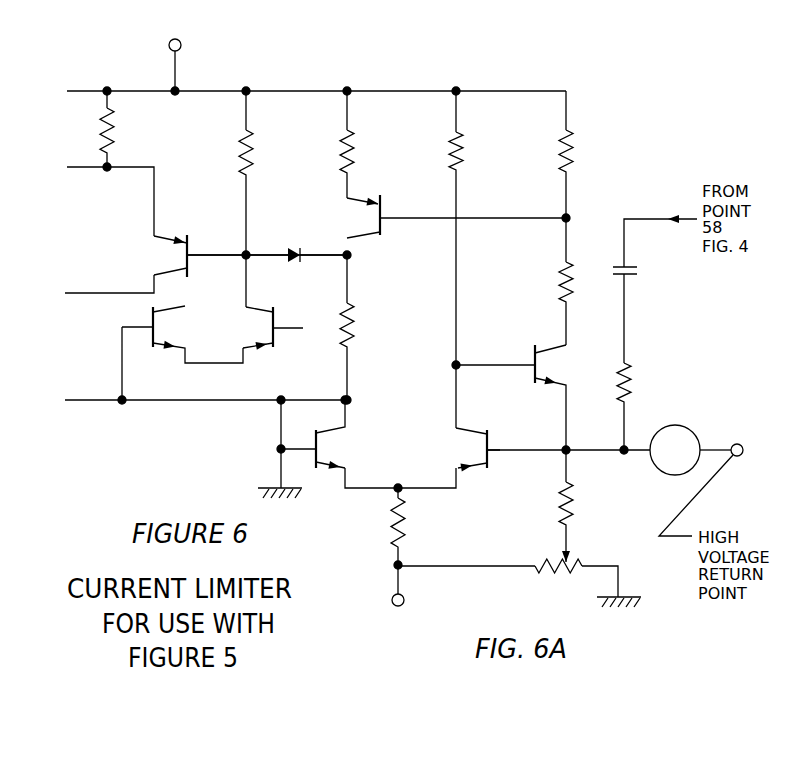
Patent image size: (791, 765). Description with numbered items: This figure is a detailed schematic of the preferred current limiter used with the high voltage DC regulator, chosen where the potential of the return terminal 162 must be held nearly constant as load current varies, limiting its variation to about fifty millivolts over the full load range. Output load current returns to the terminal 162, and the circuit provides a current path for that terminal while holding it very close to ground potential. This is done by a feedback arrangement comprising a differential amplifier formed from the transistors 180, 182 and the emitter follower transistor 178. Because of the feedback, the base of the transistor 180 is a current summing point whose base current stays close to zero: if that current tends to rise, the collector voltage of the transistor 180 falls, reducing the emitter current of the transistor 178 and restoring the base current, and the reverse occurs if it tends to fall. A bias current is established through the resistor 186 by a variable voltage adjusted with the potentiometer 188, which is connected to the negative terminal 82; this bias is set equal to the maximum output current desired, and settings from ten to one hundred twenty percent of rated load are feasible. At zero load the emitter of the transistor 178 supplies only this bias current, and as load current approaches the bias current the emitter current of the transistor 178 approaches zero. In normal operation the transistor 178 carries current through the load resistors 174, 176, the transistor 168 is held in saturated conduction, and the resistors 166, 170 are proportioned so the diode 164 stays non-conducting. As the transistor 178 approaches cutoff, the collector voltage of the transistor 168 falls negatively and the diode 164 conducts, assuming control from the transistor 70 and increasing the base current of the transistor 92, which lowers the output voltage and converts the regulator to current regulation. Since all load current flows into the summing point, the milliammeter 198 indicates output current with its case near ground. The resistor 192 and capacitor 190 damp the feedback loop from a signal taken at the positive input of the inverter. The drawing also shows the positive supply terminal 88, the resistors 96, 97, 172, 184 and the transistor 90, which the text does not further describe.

The positive supply terminal 88 is at (185, 56).
The resistor 96 is at (110, 138).
The resistor 97 is at (252, 158).
The resistor 166 is at (352, 160).
The transistor 168 is at (383, 210).
The resistor 172 is at (462, 160).
The load resistor 174 is at (572, 160).
The load resistor 176 is at (560, 290).
The emitter follower transistor 178 is at (530, 352).
The capacitor 190 is at (630, 265).
The resistor 192 is at (630, 385).
The milliammeter 198 is at (680, 428).
The terminal 162 is at (740, 451).
The transistor 180 is at (490, 440).
The transistor 182 is at (318, 437).
The resistor 184 is at (393, 517).
The negative terminal 82 is at (398, 596).
The resistor 186 is at (572, 502).
The potentiometer 188 is at (553, 575).
The transistor 92 is at (190, 248).
The diode 164 is at (294, 250).
The transistor 90 is at (148, 318).
The transistor 70 is at (277, 318).
The resistor 170 is at (352, 325).